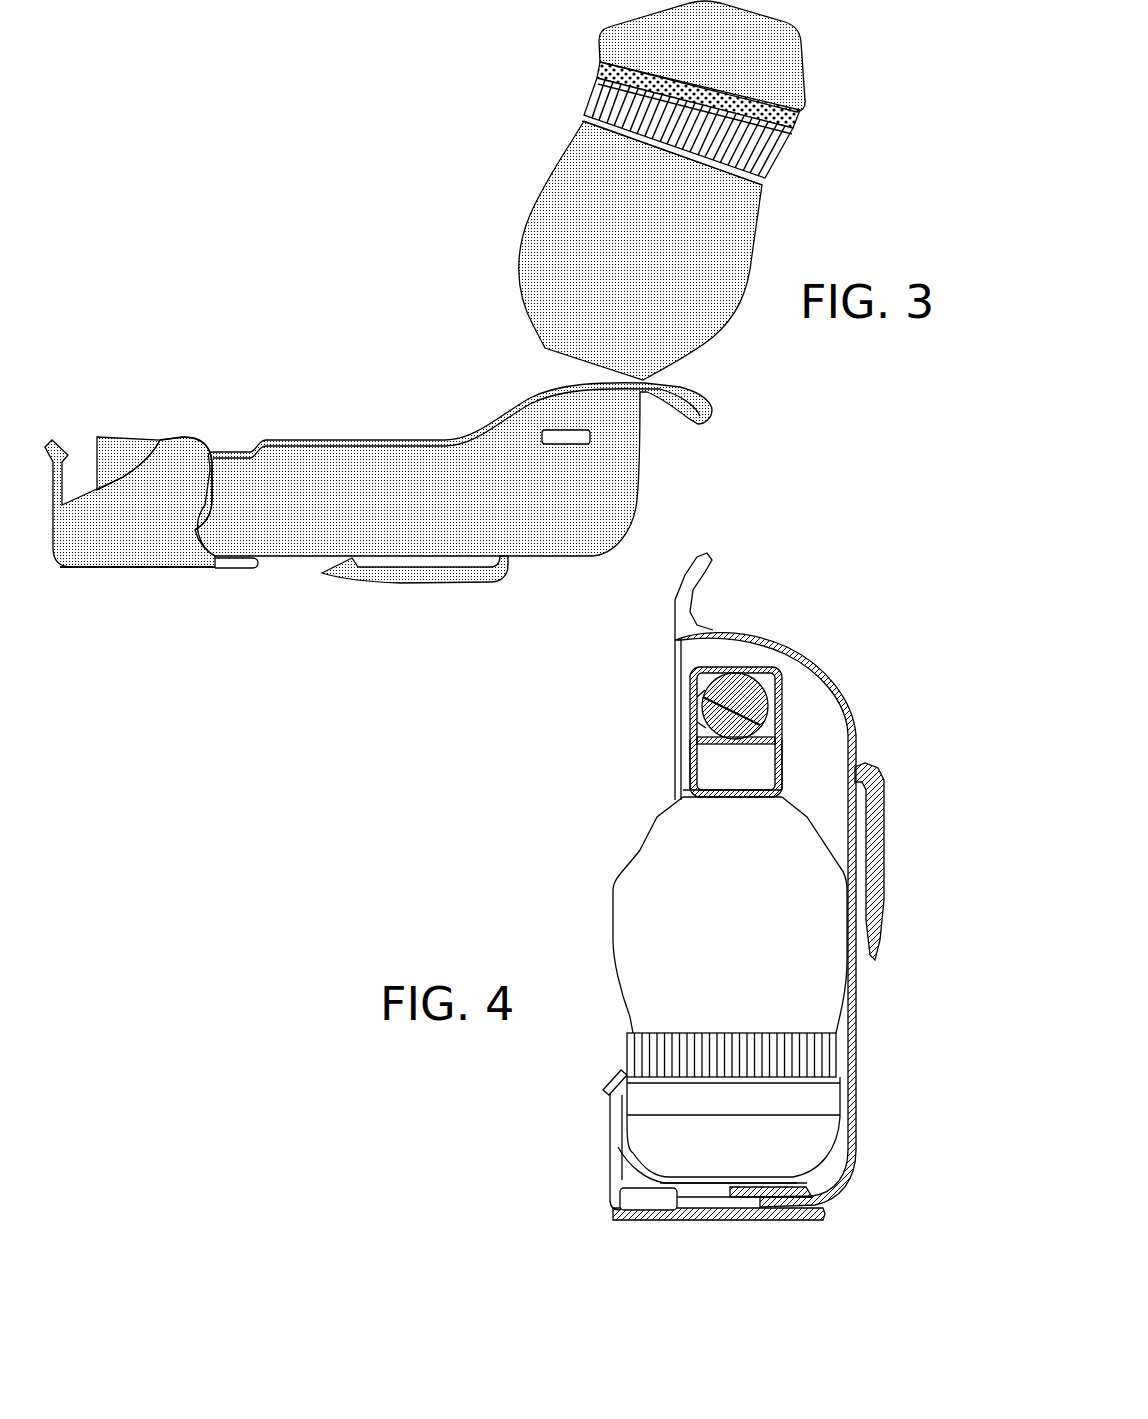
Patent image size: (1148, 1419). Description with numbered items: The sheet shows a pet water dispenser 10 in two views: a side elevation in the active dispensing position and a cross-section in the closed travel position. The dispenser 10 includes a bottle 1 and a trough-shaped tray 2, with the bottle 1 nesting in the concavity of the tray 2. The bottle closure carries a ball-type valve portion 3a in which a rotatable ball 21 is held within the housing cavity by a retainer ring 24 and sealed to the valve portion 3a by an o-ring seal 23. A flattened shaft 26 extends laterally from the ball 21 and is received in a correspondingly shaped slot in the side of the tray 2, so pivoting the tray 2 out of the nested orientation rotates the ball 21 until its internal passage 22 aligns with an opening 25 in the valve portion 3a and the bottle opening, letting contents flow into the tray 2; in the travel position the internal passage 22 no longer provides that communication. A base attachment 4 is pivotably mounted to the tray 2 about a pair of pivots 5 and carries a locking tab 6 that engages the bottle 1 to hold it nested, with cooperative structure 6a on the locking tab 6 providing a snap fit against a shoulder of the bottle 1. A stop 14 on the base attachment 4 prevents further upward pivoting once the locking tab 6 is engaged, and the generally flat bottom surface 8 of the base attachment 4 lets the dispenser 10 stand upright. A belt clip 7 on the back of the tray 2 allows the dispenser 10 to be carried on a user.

In FIG. 3, the bottle 1 is at (540, 218).
In FIG. 4, the bottle 1 is at (612, 887).
In FIG. 3, the tray 2 is at (362, 473).
In FIG. 4, the tray 2 is at (852, 732).
In FIG. 4, the valve portion 3a is at (773, 697).
In FIG. 3, the base attachment 4 is at (161, 557).
In FIG. 3, the pivots 5 is at (183, 460).
In FIG. 4, the locking tab 6 is at (606, 1093).
In FIG. 4, the cooperative structure 6a is at (623, 1100).
In FIG. 3, the belt clip 7 is at (392, 577).
In FIG. 4, the belt clip 7 is at (886, 848).
In FIG. 3, the bottom surface 8 is at (190, 568).
In FIG. 4, the bottom surface 8 is at (727, 1220).
In FIG. 3, the dispenser 10 is at (340, 242).
In FIG. 4, the dispenser 10 is at (545, 922).
In FIG. 4, the stop 14 is at (647, 1197).
In FIG. 4, the rotatable ball 21 is at (740, 677).
In FIG. 4, the internal passage 22 is at (707, 697).
In FIG. 4, the o-ring seal 23 is at (710, 672).
In FIG. 4, the retainer ring 24 is at (700, 738).
In FIG. 4, the opening 25 is at (743, 672).
In FIG. 3, the shaft 26 is at (552, 433).